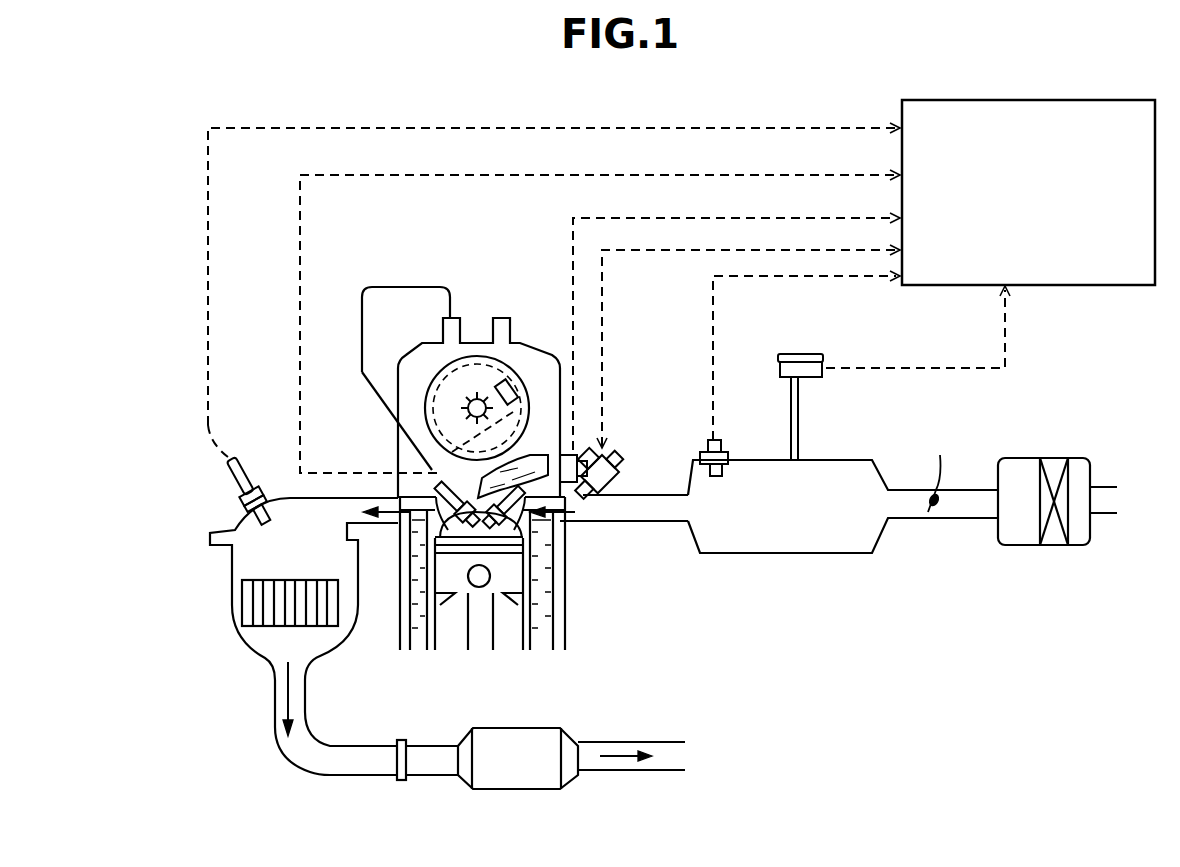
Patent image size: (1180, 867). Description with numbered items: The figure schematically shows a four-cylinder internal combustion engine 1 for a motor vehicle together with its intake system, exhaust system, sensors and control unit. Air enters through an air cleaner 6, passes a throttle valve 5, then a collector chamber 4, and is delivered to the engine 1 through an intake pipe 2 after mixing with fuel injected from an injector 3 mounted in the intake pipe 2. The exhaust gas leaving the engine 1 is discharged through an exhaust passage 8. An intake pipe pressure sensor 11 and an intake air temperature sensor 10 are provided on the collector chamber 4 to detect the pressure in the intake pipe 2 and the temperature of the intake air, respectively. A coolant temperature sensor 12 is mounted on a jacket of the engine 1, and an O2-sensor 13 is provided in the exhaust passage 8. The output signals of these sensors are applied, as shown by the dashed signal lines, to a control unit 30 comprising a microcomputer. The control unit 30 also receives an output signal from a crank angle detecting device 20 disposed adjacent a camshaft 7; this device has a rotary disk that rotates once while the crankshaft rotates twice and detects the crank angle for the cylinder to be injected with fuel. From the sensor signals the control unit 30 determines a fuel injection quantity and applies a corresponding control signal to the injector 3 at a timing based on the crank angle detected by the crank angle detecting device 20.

The internal combustion engine 1 is at (565, 618).
The intake pipe 2 is at (628, 522).
The injector 3 is at (622, 470).
The collector chamber 4 is at (782, 553).
The throttle valve 5 is at (936, 469).
The air cleaner 6 is at (1052, 546).
The camshaft 7 is at (470, 404).
The exhaust passage 8 is at (375, 530).
The intake air temperature sensor 10 is at (724, 452).
The intake pipe pressure sensor 11 is at (808, 378).
The coolant temperature sensor 12 is at (573, 452).
The O2-sensor 13 is at (250, 480).
The crank angle detecting device 20 is at (516, 397).
The control unit 30 is at (1128, 285).